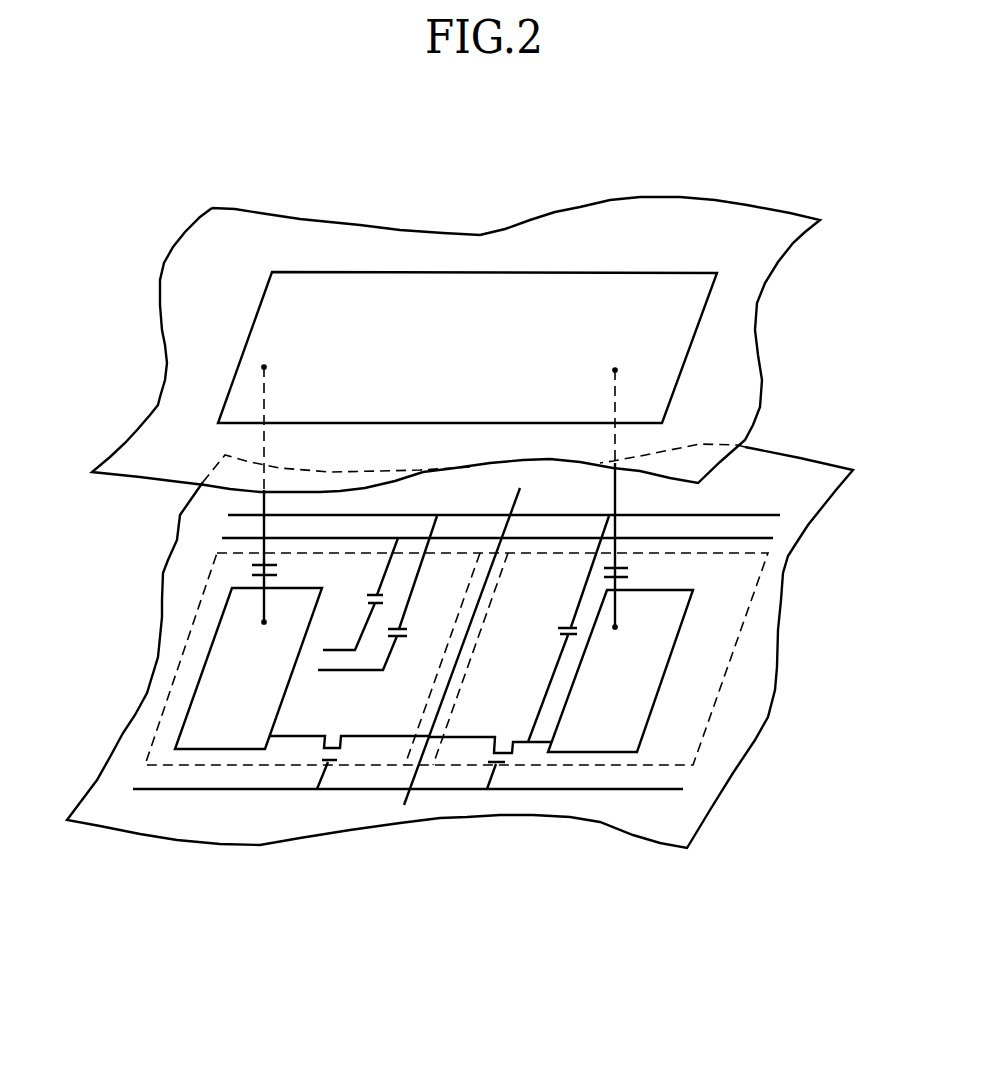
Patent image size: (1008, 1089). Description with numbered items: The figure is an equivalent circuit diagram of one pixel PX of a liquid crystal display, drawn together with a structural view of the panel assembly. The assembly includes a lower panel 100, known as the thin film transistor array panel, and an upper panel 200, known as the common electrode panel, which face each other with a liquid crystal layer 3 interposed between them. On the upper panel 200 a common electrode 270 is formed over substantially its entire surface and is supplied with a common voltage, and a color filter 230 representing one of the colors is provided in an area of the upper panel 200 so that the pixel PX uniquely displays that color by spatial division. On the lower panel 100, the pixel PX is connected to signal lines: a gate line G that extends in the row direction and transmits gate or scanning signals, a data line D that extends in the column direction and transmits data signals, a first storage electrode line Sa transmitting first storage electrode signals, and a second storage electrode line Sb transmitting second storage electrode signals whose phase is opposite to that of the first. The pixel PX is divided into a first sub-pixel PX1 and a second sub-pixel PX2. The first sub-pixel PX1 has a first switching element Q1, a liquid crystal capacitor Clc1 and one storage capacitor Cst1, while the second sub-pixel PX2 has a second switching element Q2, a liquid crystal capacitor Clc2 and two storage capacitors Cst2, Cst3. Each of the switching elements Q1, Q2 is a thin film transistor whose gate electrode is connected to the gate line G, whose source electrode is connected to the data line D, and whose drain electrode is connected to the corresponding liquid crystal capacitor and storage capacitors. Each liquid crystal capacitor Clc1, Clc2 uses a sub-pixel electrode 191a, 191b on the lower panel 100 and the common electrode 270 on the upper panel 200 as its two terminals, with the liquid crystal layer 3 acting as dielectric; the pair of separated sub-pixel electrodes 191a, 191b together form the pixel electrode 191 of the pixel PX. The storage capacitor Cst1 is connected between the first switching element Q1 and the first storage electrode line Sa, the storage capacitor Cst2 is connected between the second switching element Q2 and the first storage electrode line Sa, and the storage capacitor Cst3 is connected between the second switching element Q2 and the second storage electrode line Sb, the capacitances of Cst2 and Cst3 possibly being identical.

The liquid crystal layer 3 is at (100, 518).
The lower panel 100 is at (785, 617).
The upper panel 200 is at (783, 370).
The color filter 230 is at (598, 268).
The common electrode 270 is at (727, 352).
The pixel electrode 191 is at (497, 977).
The sub-pixel electrode 191a is at (597, 752).
The sub-pixel electrode 191b is at (218, 749).
The pixel PX is at (468, 895).
The first sub-pixel PX1 is at (470, 768).
The second sub-pixel PX2 is at (370, 765).
The first switching element Q1 is at (490, 750).
The second switching element Q2 is at (349, 748).
The liquid crystal capacitor Clc1 is at (641, 546).
The liquid crystal capacitor Clc2 is at (293, 557).
The storage capacitor Cst1 is at (558, 629).
The storage capacitor Cst2 is at (380, 594).
The storage capacitor Cst3 is at (357, 594).
The first storage electrode line Sa is at (489, 508).
The second storage electrode line Sb is at (482, 536).
The gate line G is at (399, 790).
The data line D is at (462, 655).